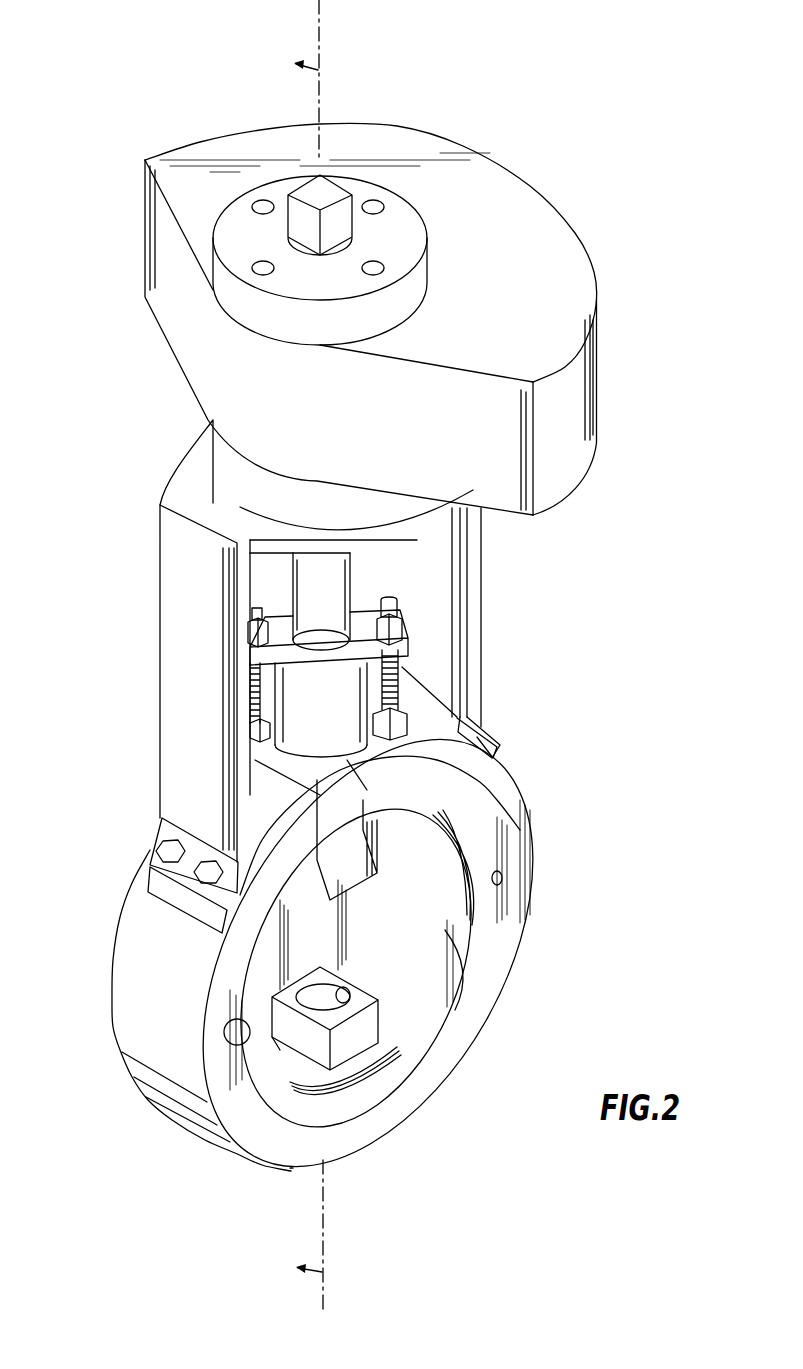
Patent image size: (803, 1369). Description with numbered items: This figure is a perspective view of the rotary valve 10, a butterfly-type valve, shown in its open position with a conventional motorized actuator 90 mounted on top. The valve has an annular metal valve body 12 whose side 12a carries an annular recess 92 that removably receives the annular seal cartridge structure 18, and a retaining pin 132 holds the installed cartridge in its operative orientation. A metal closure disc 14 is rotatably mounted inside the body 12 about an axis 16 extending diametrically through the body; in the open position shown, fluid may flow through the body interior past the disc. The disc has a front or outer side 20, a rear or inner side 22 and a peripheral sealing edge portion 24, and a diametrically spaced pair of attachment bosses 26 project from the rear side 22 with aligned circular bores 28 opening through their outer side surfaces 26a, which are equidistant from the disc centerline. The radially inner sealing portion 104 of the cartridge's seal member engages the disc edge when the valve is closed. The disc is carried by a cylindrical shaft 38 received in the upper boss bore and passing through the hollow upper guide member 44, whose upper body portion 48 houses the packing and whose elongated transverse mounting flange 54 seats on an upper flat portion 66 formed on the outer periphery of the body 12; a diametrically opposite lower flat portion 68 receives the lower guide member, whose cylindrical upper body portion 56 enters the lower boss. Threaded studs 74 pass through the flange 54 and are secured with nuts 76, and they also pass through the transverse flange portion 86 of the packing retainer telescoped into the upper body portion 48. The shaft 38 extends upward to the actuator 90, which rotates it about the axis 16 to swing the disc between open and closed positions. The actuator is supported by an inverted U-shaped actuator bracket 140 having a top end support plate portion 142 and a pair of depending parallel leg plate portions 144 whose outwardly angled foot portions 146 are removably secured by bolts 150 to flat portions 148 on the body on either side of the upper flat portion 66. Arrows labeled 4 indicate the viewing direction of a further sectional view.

The section line 4 is at (298, 665).
The rotary valve 10 is at (610, 621).
The annular metal body portion 12 is at (131, 990).
The side of the valve body 12a is at (510, 942).
The metal closure disc 14 is at (478, 967).
The axis 16 is at (320, 15).
The annular seal cartridge structure 18 is at (470, 805).
The front or outer side 20 is at (445, 858).
The rear or inner side 22 is at (388, 942).
The peripheral sealing edge portion 24 is at (462, 1000).
The attachment bosses 26 is at (362, 862).
The outer side surfaces 26a is at (300, 1060).
The bores 28 is at (345, 988).
The cylindrical shaft 38 is at (330, 582).
The upper cylindrical guide member 44 is at (341, 699).
The upper body portion 48 is at (388, 752).
The elongated transverse mounting flange 54 is at (343, 760).
The cylindrical upper body portion 56 is at (320, 993).
The upper flat portion 66 is at (323, 780).
The lower flat portion 68 is at (375, 1135).
The threaded studs 74 is at (250, 690).
The nuts 76 is at (262, 740).
The transverse flange portion 86 is at (280, 628).
The motorized actuator 90 is at (546, 192).
The annular recess 92 is at (235, 1022).
The radially inner sealing portion 104 is at (378, 1065).
The retaining pin 132 is at (502, 882).
The actuator bracket 140 is at (326, 640).
The top end support plate portion 142 is at (190, 462).
The leg plate portions 144 is at (470, 583).
The foot portions 146 is at (187, 872).
The flat portions 148 is at (203, 903).
The bolts 150 is at (160, 847).